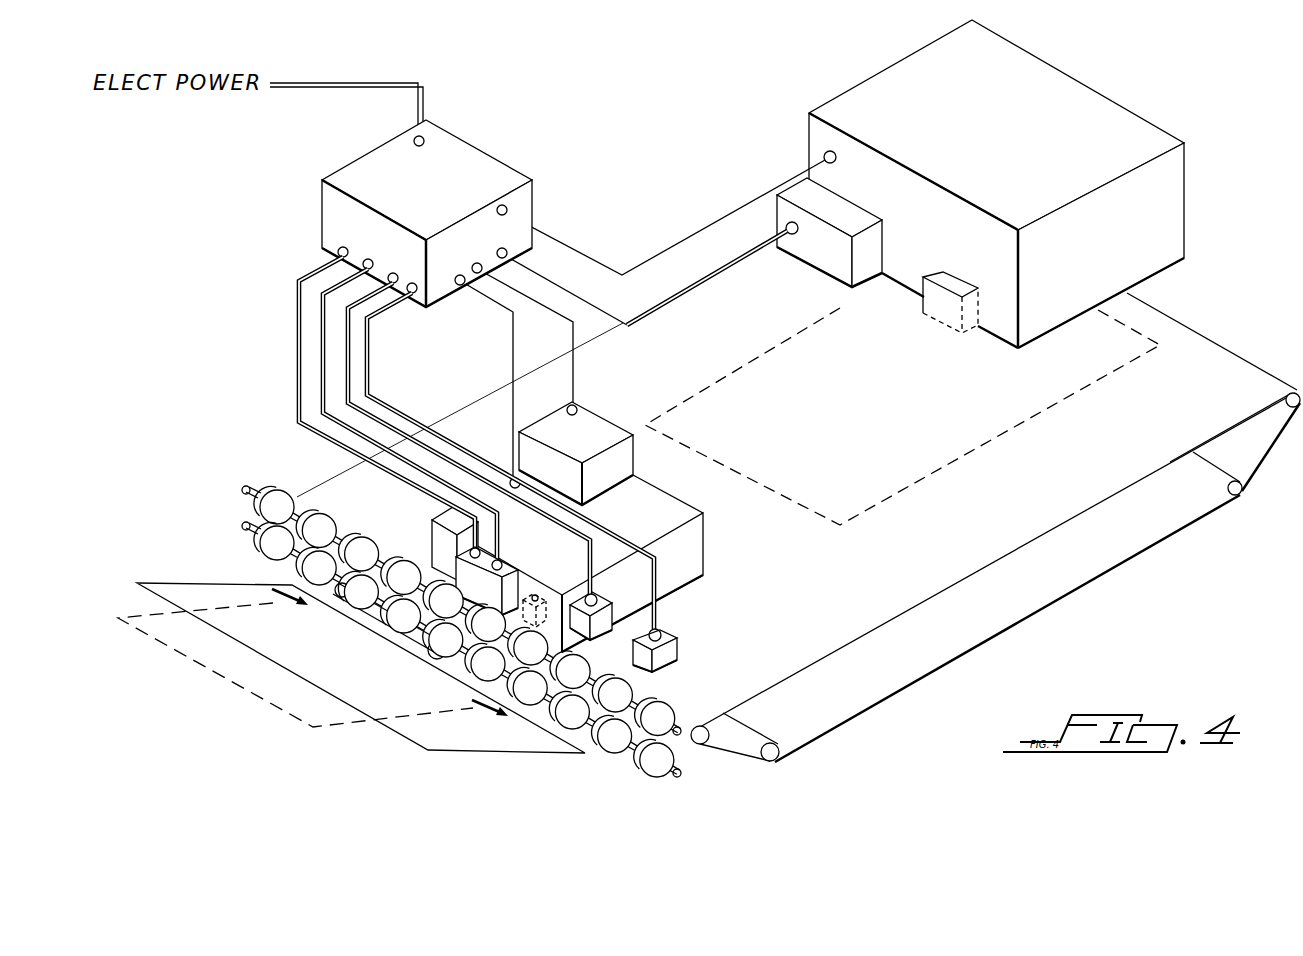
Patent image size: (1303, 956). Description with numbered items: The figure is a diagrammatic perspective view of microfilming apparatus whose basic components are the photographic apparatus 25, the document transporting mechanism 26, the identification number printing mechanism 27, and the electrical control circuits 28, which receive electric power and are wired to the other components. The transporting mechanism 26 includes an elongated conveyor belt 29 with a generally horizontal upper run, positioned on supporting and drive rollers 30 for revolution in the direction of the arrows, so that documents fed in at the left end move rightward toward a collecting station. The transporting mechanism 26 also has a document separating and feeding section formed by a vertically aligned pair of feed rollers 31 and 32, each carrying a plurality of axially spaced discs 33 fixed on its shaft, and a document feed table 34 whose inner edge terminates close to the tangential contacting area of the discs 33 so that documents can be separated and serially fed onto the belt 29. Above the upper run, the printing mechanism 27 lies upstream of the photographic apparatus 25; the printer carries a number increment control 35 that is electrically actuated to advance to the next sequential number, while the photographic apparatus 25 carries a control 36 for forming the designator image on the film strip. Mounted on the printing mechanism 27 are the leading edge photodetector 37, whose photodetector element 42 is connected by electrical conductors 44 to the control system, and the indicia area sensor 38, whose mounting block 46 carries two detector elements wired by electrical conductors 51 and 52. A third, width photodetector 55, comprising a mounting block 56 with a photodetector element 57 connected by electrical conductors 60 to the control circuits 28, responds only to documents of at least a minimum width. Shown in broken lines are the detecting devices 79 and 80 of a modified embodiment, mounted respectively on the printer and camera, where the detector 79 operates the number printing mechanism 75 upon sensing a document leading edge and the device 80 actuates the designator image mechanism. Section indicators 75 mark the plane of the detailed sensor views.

The photographic apparatus 25 is at (1058, 90).
The document transporting mechanism 26 is at (736, 760).
The identification number printing mechanism 27 is at (690, 577).
The electrical control circuits 28 is at (480, 170).
The conveyor belt 29 is at (1250, 383).
The supporting and drive rollers 30 is at (1228, 492).
The feed roller 31 is at (693, 713).
The feed roller 32 is at (668, 775).
The axially spaced discs 33 is at (678, 720).
The document feed table 34 is at (472, 742).
The number increment control 35 is at (590, 416).
The designator image control 36 is at (872, 247).
The leading edge photodetector 37 is at (607, 610).
The indicia area sensor 38 is at (524, 560).
The photodetector element 42 is at (592, 594).
The electrical conductors 44 is at (592, 548).
The mounting block 46 is at (450, 540).
The electrical conductors 51 is at (493, 556).
The electrical conductors 52 is at (430, 498).
The width photodetector 55 is at (666, 659).
The mounting block 56 is at (656, 672).
The photodetector element 57 is at (663, 627).
The electrical conductors 60 is at (657, 556).
The number printing mechanism 75 is at (390, 663).
The detecting device 79 is at (550, 582).
The detecting device 80 is at (990, 258).